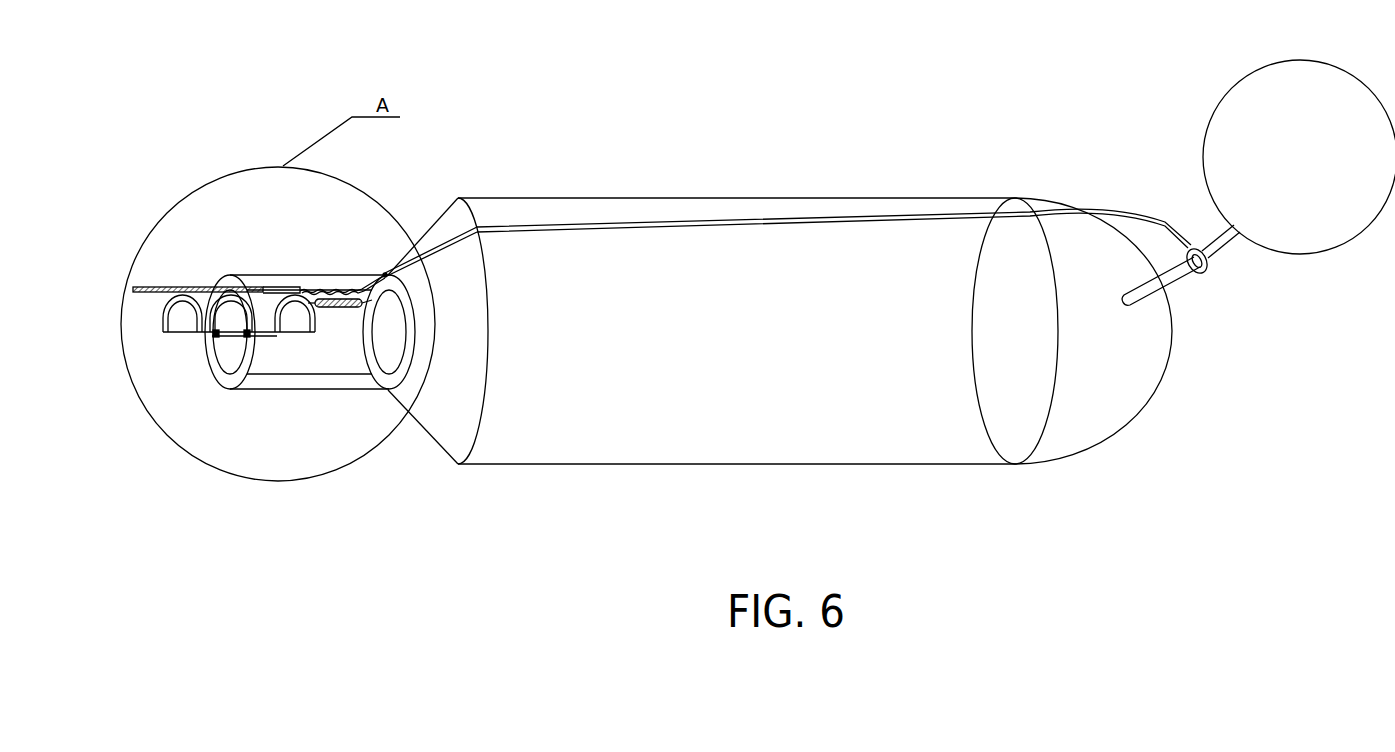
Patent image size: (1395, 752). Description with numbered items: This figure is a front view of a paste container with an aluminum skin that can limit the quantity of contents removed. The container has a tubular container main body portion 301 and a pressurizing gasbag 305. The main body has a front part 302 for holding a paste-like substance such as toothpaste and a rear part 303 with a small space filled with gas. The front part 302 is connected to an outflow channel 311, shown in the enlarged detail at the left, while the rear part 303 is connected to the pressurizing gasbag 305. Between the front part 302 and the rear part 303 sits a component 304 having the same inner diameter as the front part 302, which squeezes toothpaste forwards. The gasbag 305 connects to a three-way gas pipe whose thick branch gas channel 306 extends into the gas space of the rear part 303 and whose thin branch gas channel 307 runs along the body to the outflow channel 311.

The container main body portion 301 is at (736, 290).
The front part 302 is at (736, 459).
The rear part 303 is at (1122, 332).
The component 304 is at (1026, 345).
The pressurizing gasbag 305 is at (1299, 183).
The thick branch gas channel 306 is at (1192, 284).
The thin branch gas channel 307 is at (834, 193).
The outflow channel 311 is at (305, 377).